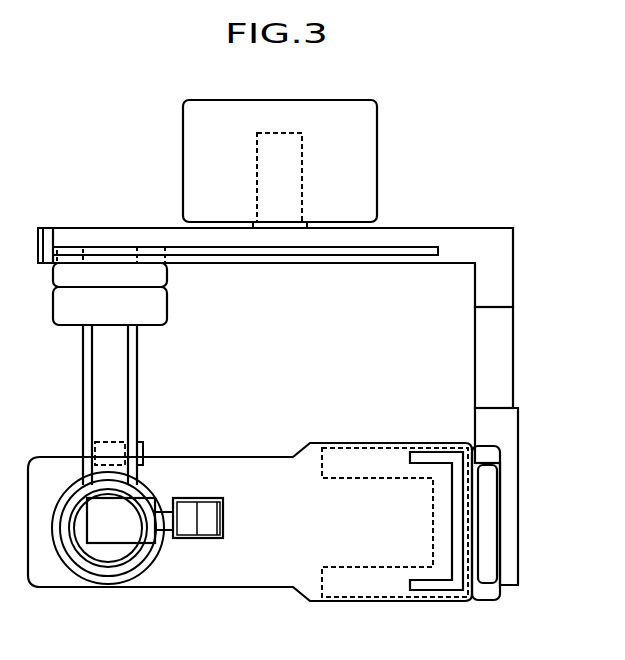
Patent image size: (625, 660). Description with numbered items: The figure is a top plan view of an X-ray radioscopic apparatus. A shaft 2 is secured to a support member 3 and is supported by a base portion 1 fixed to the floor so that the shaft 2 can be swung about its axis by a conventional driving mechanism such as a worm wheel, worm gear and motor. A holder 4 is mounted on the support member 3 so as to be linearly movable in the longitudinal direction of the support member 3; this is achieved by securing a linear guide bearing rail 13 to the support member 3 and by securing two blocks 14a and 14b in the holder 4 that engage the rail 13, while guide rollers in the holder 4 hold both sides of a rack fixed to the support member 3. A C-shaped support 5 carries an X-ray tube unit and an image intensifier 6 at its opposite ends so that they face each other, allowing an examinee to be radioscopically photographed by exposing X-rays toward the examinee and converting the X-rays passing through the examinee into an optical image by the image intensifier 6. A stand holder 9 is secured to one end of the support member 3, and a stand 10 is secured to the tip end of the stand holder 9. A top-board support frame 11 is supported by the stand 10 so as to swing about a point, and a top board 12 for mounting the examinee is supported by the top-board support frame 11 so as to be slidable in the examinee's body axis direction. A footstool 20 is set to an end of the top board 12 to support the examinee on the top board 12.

The base portion 1 is at (183, 122).
The shaft 2 is at (303, 160).
The support member 3 is at (495, 232).
The holder 4 is at (168, 297).
The C-shaped support 5 is at (83, 380).
The image intensifier 6 is at (148, 555).
The stand holder 9 is at (510, 353).
The stand 10 is at (512, 517).
The top-board support frame 11 is at (477, 597).
The top board 12 is at (217, 458).
The linear guide bearing rail 13 is at (428, 247).
The block 14a is at (147, 247).
The block 14b is at (67, 247).
The footstool 20 is at (421, 591).